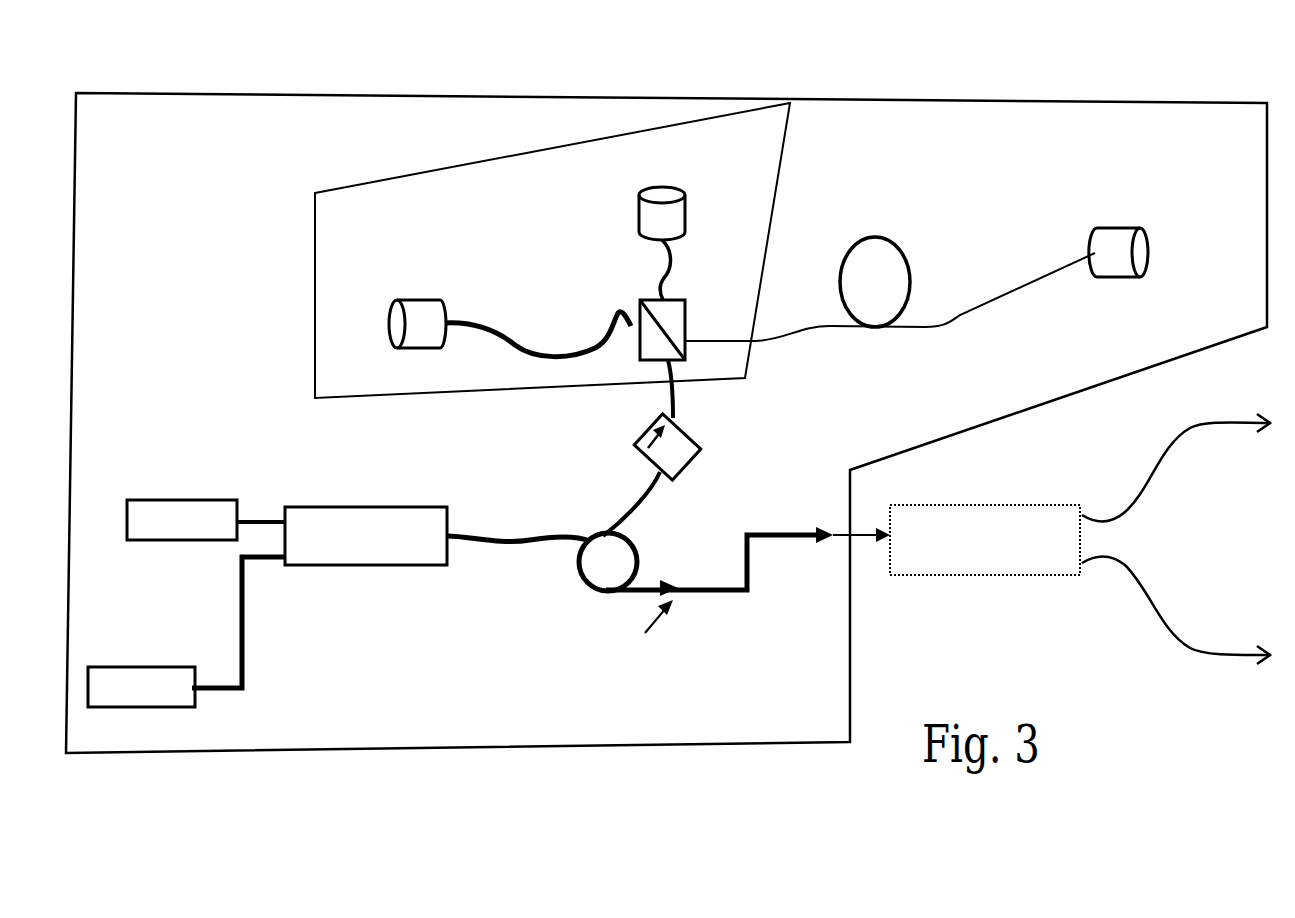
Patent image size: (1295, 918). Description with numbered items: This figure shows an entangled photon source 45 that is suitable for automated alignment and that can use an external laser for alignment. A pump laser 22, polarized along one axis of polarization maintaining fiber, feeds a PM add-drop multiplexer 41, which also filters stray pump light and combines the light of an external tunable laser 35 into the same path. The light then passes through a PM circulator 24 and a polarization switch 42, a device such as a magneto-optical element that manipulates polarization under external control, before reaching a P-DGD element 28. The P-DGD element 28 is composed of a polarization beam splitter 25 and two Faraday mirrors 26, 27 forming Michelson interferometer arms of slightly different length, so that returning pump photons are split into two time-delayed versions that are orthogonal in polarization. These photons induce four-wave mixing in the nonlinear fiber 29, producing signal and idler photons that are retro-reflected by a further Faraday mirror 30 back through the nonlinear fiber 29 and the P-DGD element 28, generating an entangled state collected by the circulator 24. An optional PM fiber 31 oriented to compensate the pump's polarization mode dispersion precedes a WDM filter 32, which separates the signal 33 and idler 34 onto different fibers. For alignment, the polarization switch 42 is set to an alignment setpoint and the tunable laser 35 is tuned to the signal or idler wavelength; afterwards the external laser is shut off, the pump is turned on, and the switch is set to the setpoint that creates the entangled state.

The optical parametric amplifier system 45 is at (666, 404).
The P-DGD element 28 is at (552, 250).
The Faraday mirror 27 is at (643, 210).
The polarization beam splitter 25 is at (685, 325).
The Faraday mirror 26 is at (478, 322).
The nonlinear fiber 29 is at (890, 262).
The Faraday mirror 30 is at (1165, 234).
The polarization switch 42 is at (643, 448).
The pump laser 22 is at (206, 519).
The PM add-drop multiplexer 41 is at (437, 542).
The tunable laser 35 is at (186, 647).
The PM circulator 24 is at (617, 549).
The PM fiber 31 is at (730, 620).
The WDM filter 32 is at (985, 524).
The signal 33 is at (1168, 452).
The idler 34 is at (1172, 633).